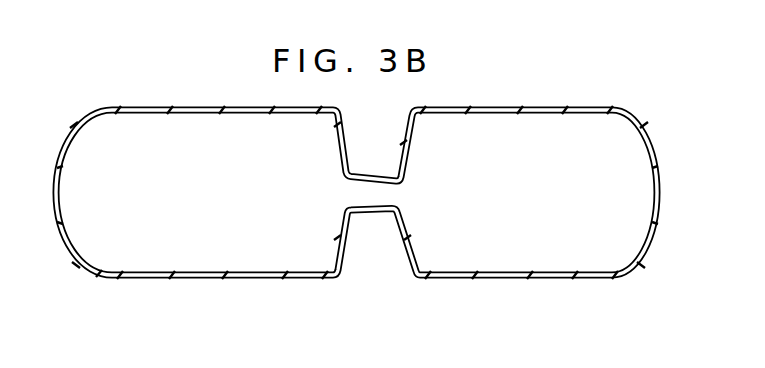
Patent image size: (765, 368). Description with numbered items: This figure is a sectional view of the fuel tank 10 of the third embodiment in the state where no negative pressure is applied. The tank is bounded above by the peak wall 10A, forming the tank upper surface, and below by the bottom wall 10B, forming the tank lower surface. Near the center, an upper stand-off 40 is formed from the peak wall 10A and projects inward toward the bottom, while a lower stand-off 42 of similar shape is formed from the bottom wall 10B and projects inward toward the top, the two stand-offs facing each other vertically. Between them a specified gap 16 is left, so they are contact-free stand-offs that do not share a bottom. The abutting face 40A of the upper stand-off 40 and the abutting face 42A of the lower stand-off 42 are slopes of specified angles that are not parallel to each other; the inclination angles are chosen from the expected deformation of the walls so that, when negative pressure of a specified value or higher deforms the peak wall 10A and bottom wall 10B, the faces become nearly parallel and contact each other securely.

The fuel tank 10 is at (613, 69).
The peak wall 10A is at (534, 107).
The bottom wall 10B is at (573, 278).
The gap 16 is at (377, 195).
The upper stand-off 40 is at (330, 133).
The abutting face 40A is at (353, 182).
The lower stand-off 42 is at (330, 232).
The abutting face 42A is at (352, 202).